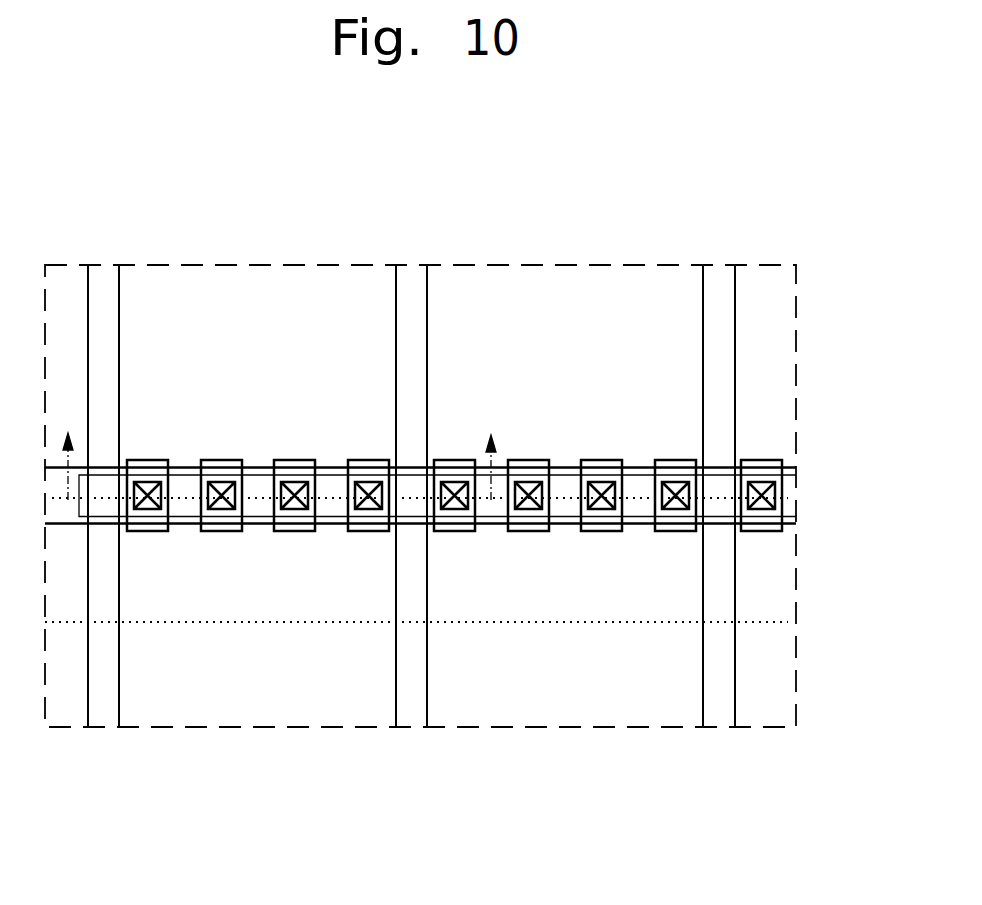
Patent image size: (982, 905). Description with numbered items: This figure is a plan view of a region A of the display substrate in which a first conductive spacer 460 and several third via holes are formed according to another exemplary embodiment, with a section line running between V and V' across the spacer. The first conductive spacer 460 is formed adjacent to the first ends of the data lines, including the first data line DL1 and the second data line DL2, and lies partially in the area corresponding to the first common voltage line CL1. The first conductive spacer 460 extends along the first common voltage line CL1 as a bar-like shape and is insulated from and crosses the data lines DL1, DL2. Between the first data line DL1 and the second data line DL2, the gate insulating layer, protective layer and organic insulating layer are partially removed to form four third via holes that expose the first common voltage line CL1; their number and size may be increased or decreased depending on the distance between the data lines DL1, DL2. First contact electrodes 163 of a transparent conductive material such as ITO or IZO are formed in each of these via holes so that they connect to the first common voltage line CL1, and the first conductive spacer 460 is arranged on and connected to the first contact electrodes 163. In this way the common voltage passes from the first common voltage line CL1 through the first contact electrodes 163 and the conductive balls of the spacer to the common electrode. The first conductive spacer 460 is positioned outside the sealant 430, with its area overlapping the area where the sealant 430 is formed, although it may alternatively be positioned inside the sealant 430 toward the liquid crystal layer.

The first contact electrode 163 is at (147, 458).
The first conductive spacer 460 is at (564, 517).
The sealant 430 is at (757, 622).
The first common voltage line CL1 is at (718, 466).
The first data line DL1 is at (105, 708).
The second data line DL2 is at (413, 708).
The region A is at (652, 263).
The section line V is at (69, 452).
The section line V' is at (495, 455).